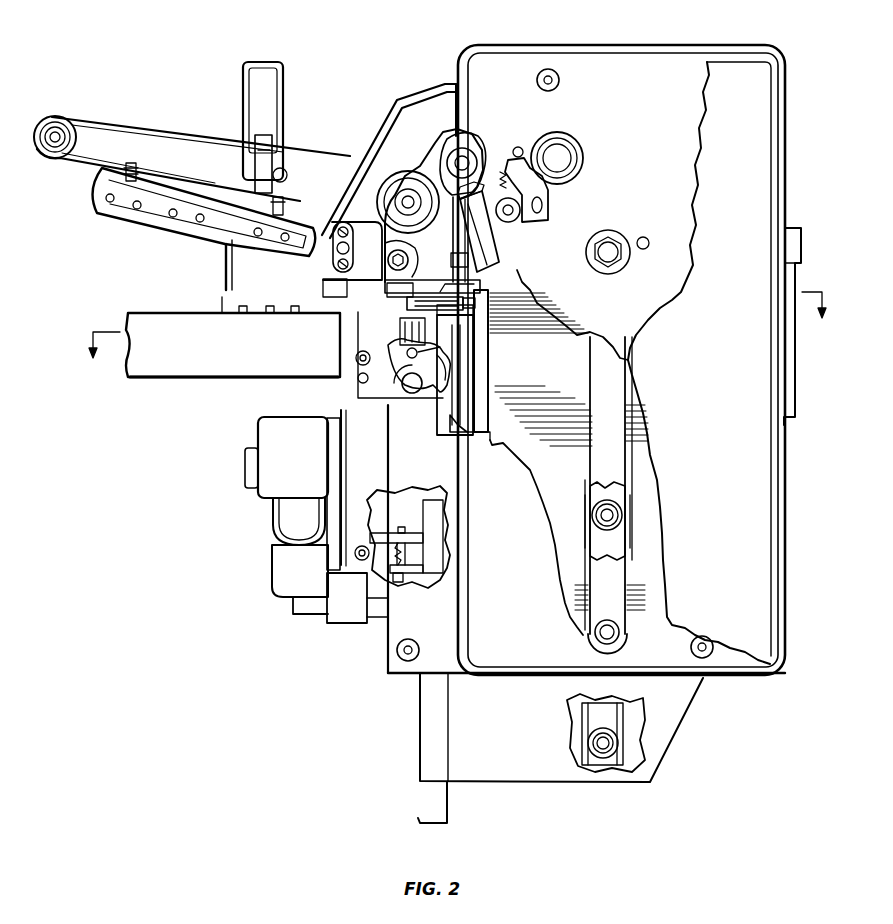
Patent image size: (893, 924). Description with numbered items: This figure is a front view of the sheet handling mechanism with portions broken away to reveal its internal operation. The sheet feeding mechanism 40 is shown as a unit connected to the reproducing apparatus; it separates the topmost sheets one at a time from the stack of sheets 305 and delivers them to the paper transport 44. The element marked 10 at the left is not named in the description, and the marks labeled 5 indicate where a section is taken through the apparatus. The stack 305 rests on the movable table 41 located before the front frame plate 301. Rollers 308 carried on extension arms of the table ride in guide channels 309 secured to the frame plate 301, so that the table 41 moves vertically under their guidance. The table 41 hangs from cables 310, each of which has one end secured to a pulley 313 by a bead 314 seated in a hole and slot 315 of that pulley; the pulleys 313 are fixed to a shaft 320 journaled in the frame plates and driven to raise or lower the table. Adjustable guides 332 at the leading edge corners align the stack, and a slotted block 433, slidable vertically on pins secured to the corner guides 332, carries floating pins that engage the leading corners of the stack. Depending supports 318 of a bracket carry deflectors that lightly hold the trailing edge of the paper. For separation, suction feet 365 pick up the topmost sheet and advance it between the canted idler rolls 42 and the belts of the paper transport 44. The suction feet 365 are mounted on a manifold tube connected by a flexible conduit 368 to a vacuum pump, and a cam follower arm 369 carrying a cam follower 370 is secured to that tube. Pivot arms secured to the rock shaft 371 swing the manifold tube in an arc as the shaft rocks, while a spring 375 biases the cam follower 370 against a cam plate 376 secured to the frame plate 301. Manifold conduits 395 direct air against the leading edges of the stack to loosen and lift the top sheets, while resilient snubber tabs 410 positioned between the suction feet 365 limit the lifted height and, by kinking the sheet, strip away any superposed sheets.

The workpiece support plate 10 is at (175, 388).
The sheet feeding mechanism 40 is at (538, 38).
The paper transport 44 is at (165, 113).
The front frame plate 301 is at (635, 48).
The stack of sheets 305 is at (521, 294).
The rollers 308 is at (587, 510).
The guide channels 309 is at (597, 470).
The cables 310 is at (449, 420).
The pulley 313 is at (462, 397).
The bead 314 is at (397, 340).
The hole and slot 315 is at (440, 348).
The depending supports 318 is at (785, 422).
The shaft 320 is at (414, 392).
The adjustable guides 332 is at (493, 422).
The suction feet 365 is at (450, 252).
The flexible conduit 368 is at (490, 256).
The cam follower arm 369 is at (508, 160).
The cam follower 370 is at (509, 221).
The rock shaft 371 is at (565, 157).
The spring 375 is at (526, 157).
The cam plate 376 is at (548, 214).
The manifold conduits 395 is at (397, 313).
The snubber tabs 410 is at (490, 283).
The slotted block 433 is at (352, 251).
The movable table 41 is at (634, 625).
The idler rolls 42 is at (430, 205).
The section line 5- 5 is at (456, 335).